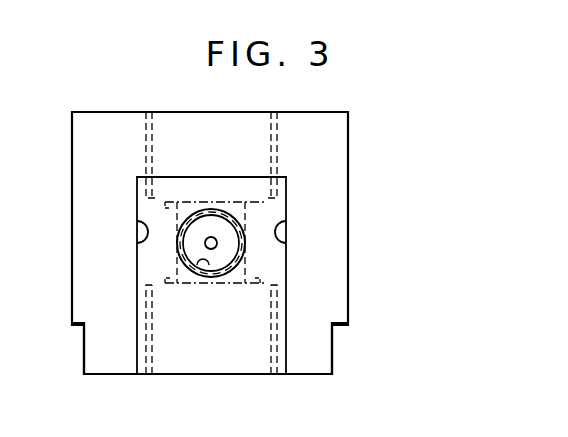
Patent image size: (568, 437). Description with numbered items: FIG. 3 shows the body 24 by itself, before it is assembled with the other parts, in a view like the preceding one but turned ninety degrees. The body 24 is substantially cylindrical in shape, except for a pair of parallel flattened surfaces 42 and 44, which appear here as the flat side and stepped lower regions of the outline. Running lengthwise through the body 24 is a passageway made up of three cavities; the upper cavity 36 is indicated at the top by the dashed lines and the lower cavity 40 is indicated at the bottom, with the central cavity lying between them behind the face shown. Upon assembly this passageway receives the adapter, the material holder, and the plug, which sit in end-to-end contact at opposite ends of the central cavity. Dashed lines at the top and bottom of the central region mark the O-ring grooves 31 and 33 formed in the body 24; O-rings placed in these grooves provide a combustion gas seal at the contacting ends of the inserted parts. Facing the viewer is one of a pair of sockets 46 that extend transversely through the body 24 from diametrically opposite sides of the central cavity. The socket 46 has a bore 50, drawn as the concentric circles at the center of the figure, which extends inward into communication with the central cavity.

The body 24 is at (72, 137).
The O-ring groove 31 is at (262, 208).
The O-ring groove 33 is at (258, 277).
The upper cavity 36 is at (151, 136).
The lower cavity 40 is at (270, 325).
The flattened surface 42 is at (137, 240).
The flattened surface 44 is at (82, 348).
The socket 46 is at (208, 262).
The bore 50 is at (211, 237).